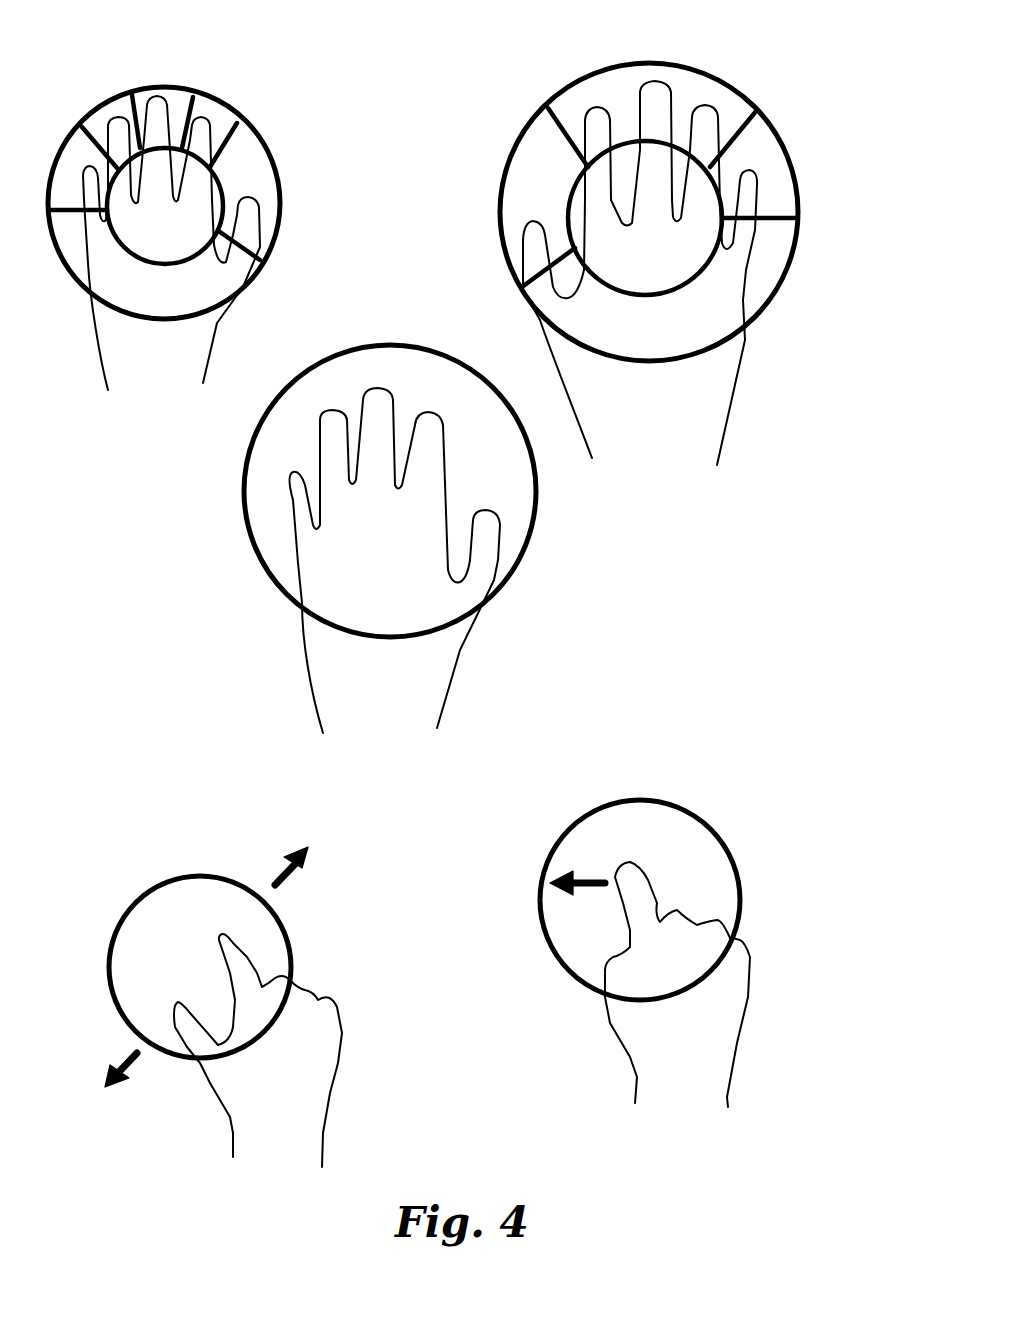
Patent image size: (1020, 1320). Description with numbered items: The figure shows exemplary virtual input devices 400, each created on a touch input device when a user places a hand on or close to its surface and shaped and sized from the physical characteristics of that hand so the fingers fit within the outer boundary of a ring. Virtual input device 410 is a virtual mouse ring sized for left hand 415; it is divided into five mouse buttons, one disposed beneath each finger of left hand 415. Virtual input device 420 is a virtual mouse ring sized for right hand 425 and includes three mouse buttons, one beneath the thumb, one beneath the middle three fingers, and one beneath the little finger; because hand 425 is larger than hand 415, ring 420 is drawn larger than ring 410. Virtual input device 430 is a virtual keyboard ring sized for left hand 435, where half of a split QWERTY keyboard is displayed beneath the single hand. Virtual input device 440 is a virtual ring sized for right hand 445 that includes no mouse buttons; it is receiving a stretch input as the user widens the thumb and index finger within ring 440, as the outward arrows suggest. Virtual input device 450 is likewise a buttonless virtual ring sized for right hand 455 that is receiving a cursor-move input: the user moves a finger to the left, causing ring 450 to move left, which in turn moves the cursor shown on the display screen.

The virtual input devices 400 is at (797, 50).
The virtual input device 410 is at (229, 98).
The left hand 415 is at (137, 352).
The virtual input device 420 is at (645, 55).
The right hand 425 is at (633, 413).
The virtual input device 430 is at (381, 334).
The left hand 435 is at (327, 691).
The virtual input device 440 is at (179, 869).
The right hand 445 is at (252, 1131).
The virtual input device 450 is at (661, 793).
The right hand 455 is at (642, 1053).